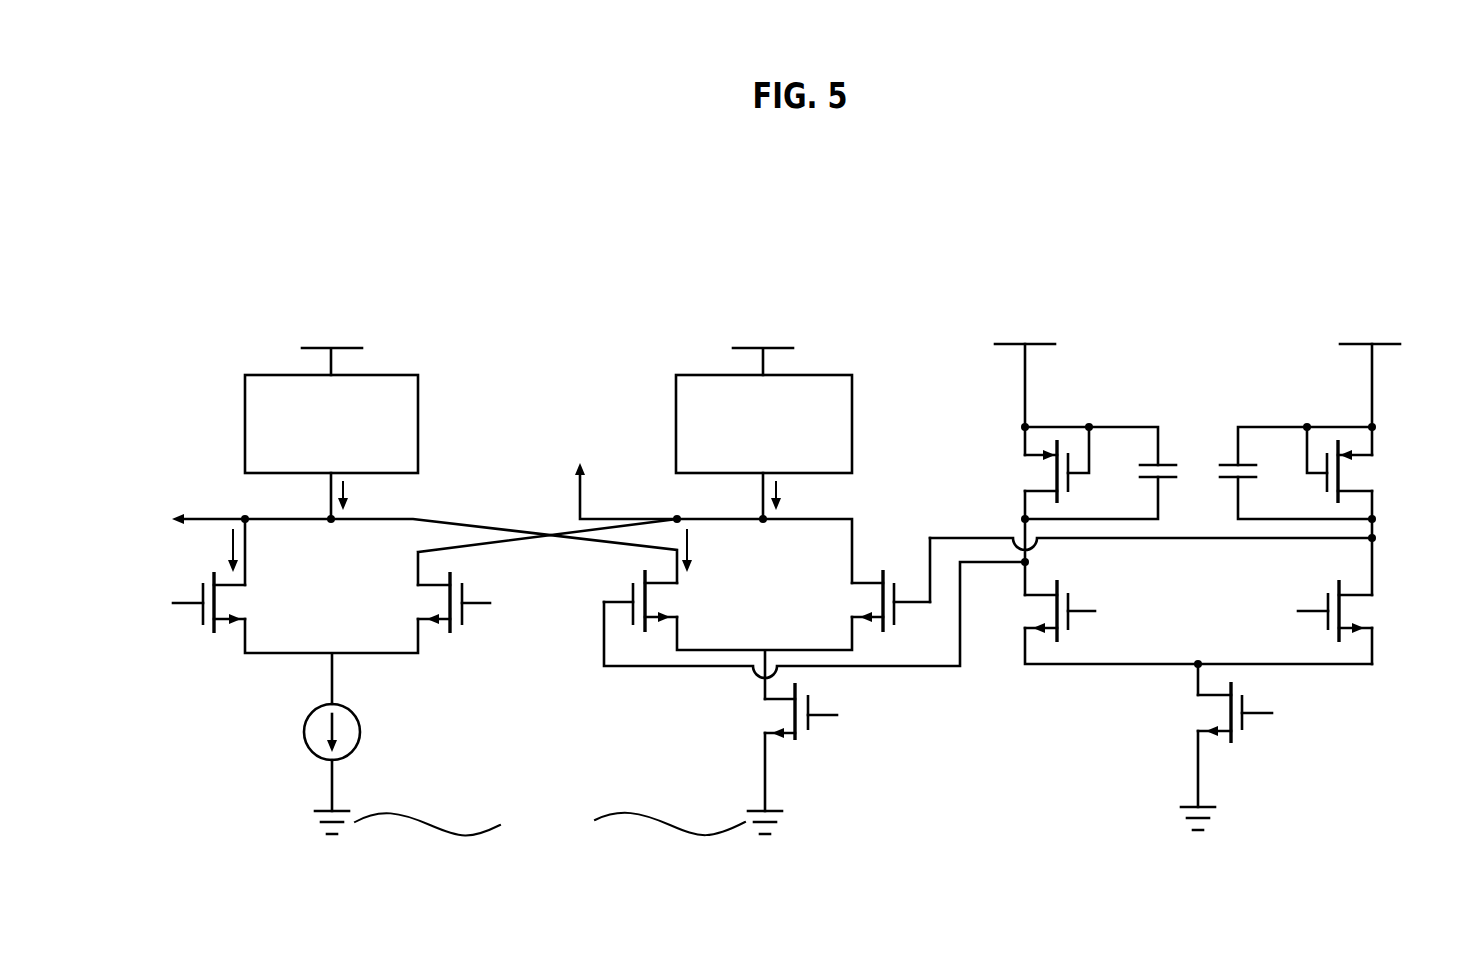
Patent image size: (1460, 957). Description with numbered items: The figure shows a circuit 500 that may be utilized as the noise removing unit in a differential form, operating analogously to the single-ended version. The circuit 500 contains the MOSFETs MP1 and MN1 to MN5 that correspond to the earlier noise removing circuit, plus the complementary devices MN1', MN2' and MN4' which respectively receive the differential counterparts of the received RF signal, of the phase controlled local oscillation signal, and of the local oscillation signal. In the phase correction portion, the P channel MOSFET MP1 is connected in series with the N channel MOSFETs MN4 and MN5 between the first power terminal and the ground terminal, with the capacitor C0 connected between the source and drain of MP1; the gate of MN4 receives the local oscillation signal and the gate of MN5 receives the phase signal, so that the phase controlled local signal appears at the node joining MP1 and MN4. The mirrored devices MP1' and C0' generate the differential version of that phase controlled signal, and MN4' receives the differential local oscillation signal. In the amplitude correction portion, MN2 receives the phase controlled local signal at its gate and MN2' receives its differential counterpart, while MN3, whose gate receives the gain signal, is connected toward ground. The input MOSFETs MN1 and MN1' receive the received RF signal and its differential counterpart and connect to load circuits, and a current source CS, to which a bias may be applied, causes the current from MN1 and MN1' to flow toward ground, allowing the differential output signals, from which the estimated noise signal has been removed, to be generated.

The noise removing circuit 500 is at (1244, 232).
The MOSFET MN1 is at (242, 602).
The MOSFET MN1' is at (423, 602).
The first MOSFET of amplitude correction circuit MN2 is at (673, 601).
The MOSFET MN2' is at (856, 601).
The second MOSFET of amplitude correction circuit MN3 is at (769, 711).
The second MOSFET of phase correction circuit MN4 is at (1033, 611).
The MOSFET MN4' is at (1369, 611).
The third MOSFET of phase correction circuit MN5 is at (1204, 712).
The first MOSFET of phase correction circuit MP1 is at (1032, 465).
The MOSFET MP1' is at (1373, 465).
The capacitor C0 is at (1140, 475).
The capacitor C0' is at (1262, 475).
The current source CS is at (360, 730).